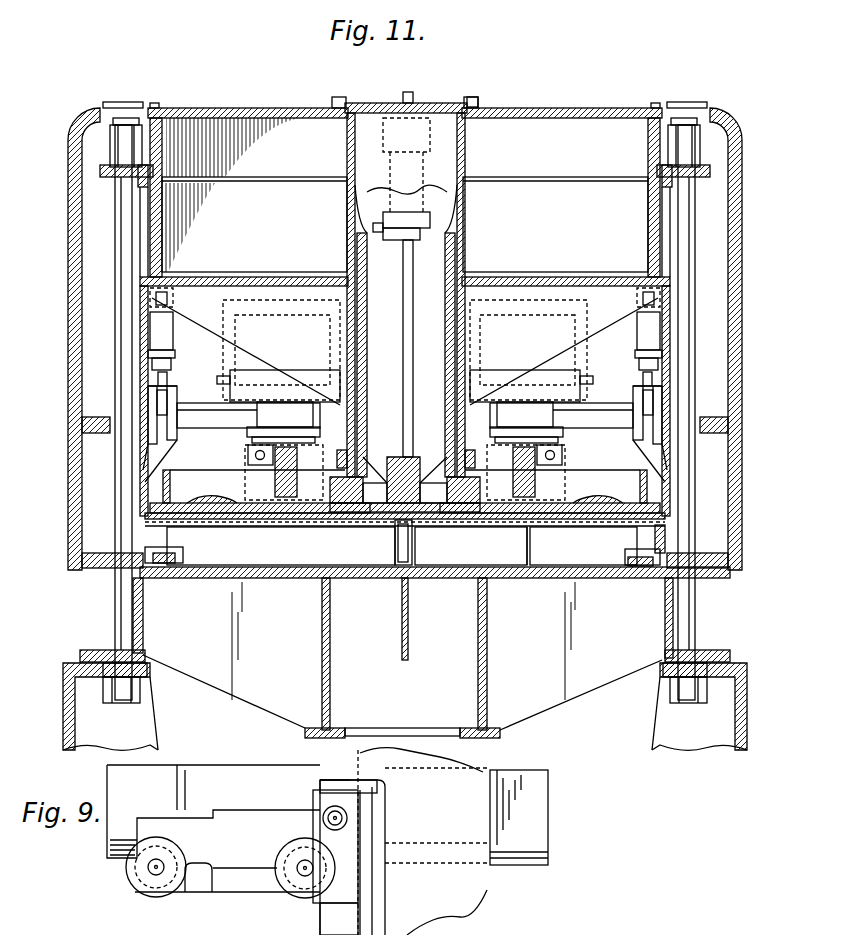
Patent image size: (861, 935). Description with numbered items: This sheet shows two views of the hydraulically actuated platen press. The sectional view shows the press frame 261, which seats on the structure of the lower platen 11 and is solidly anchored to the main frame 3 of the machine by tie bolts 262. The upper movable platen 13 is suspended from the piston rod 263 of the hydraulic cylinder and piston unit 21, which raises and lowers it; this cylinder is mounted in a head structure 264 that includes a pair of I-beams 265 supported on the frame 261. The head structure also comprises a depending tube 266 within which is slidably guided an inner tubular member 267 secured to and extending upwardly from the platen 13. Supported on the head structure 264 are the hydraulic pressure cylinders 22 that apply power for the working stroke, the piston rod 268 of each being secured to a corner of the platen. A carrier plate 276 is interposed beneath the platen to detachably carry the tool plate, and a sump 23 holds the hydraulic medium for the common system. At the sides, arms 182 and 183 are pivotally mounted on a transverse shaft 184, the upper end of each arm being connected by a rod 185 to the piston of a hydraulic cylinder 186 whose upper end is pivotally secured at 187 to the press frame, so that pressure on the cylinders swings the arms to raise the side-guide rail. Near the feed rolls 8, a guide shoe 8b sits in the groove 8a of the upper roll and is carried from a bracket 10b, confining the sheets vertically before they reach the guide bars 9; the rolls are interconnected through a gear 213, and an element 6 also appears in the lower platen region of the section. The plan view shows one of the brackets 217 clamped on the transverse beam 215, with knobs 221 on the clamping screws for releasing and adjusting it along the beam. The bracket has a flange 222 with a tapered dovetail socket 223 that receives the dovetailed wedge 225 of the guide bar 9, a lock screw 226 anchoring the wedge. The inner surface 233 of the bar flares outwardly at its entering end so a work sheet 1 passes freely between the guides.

In FIG. 11, the press frame 261 is at (68, 362).
In FIG. 11, the tie bolts 262 is at (115, 596).
In FIG. 11, the main frame 3 is at (63, 718).
In FIG. 11, the feed rolls 8 is at (235, 570).
In FIG. 11, the lower platen 11 is at (282, 578).
In FIG. 11, the guide shoe 8b is at (401, 578).
In FIG. 11, the head structure 264 is at (297, 182).
In FIG. 11, the I-beams 265 is at (578, 182).
In FIG. 11, the sump 23 is at (258, 243).
In FIG. 11, the inner tubular member 267 is at (368, 290).
In FIG. 11, the hydraulic cylinder and piston unit 21 is at (421, 230).
In FIG. 11, the piston rod 263 is at (402, 342).
In FIG. 11, the pivotal securement 187 is at (173, 300).
In FIG. 11, the hydraulic cylinder 186 is at (173, 340).
In FIG. 11, the rod 185 is at (168, 385).
In FIG. 11, the arm 183 is at (177, 445).
In FIG. 11, the arm 182 is at (636, 450).
In FIG. 11, the transverse shaft 184 is at (200, 416).
In FIG. 11, the hydraulic pressure cylinders 22 is at (255, 385).
In FIG. 11, the depending tube 266 is at (482, 345).
In FIG. 11, the piston rod 268 is at (272, 485).
In FIG. 11, the carrier plate 276 is at (160, 516).
In FIG. 11, the block 6 is at (285, 528).
In FIG. 11, the groove 8a is at (395, 550).
In FIG. 11, the bracket 10b is at (412, 528).
In FIG. 11, the upper movable platen 13 is at (464, 506).
In FIG. 11, the work sheet 1 is at (520, 565).
In FIG. 9, the work sheet 1 is at (487, 890).
In FIG. 11, the brackets 217 is at (175, 557).
In FIG. 9, the brackets 217 is at (255, 900).
In FIG. 11, the guide bars 9 is at (170, 576).
In FIG. 9, the guide bars 9 is at (318, 913).
In FIG. 11, the gear 213 is at (665, 536).
In FIG. 9, the knobs 221 is at (280, 850).
In FIG. 9, the flange 222 is at (368, 878).
In FIG. 9, the dovetailed wedge 225 is at (320, 770).
In FIG. 9, the inner surface 233 is at (356, 770).
In FIG. 9, the lock screws 226 is at (325, 812).
In FIG. 9, the dovetail socket 223 is at (352, 830).
In FIG. 9, the transverse beam 215 is at (535, 808).